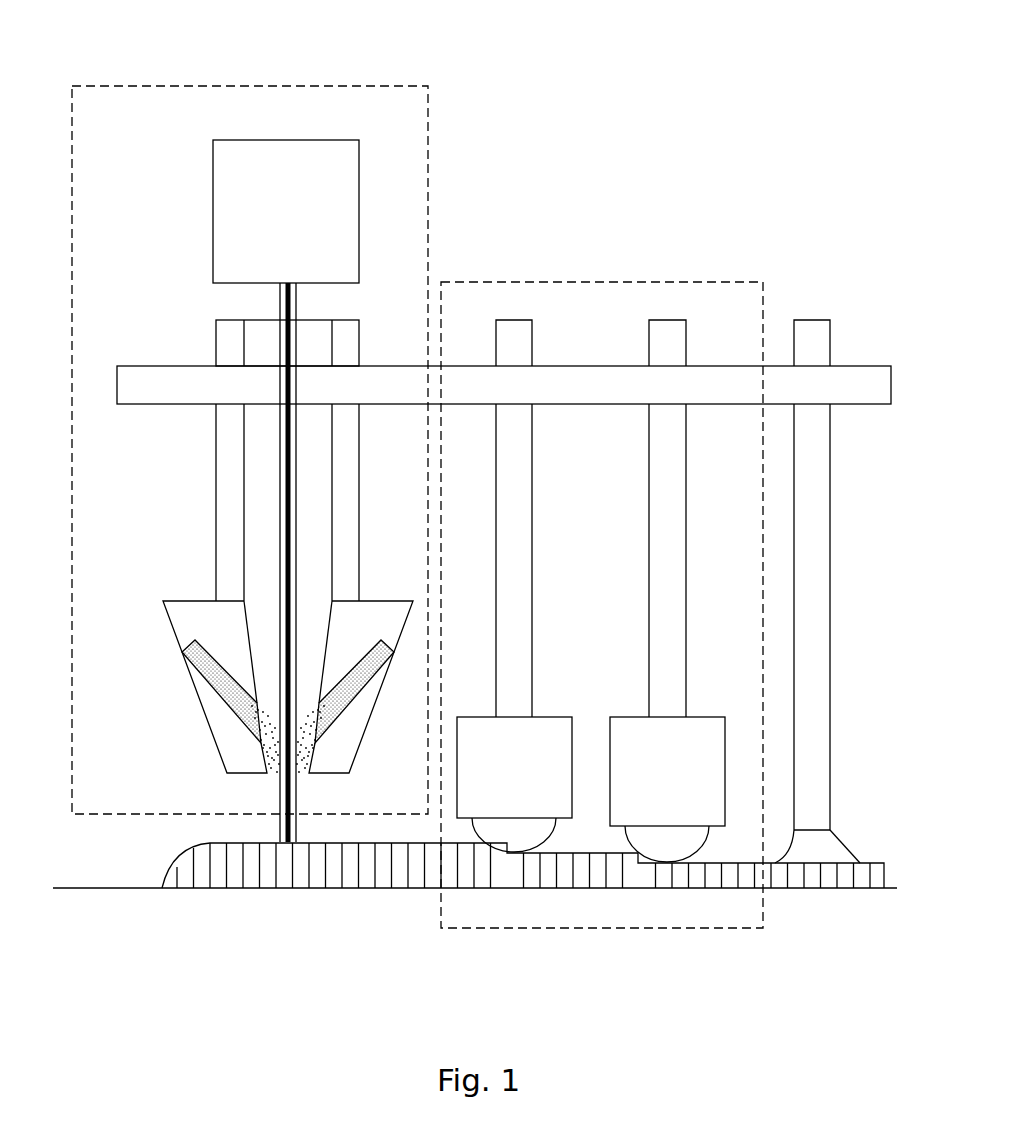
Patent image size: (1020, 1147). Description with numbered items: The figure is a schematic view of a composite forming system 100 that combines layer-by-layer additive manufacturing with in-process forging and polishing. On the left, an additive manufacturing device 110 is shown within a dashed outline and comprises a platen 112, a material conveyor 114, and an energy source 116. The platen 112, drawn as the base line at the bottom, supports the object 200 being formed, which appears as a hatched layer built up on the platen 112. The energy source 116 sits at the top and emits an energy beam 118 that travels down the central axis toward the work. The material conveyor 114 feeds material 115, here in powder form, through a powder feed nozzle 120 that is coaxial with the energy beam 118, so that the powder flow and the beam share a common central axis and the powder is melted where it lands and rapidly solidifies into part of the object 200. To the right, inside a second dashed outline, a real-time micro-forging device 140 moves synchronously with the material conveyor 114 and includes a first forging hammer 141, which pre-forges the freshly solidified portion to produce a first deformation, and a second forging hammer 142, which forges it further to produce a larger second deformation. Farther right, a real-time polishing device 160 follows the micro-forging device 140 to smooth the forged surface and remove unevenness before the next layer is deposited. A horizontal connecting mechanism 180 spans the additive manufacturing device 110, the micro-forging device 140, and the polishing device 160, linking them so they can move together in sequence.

The composite forming system 100 is at (155, 52).
The additive manufacturing device 110 is at (428, 133).
The platen 112 is at (102, 888).
The material conveyor 114 is at (197, 600).
The material 115 is at (182, 652).
The energy source 116 is at (295, 140).
The energy beam 118 is at (283, 518).
The powder feed nozzle 120 is at (227, 728).
The real-time micro-forging device 140 is at (585, 281).
The first forging hammer 141 is at (552, 717).
The second forging hammer 142 is at (708, 717).
The real-time polishing device 160 is at (842, 847).
The connecting mechanism 180 is at (858, 367).
The object 200 is at (398, 872).